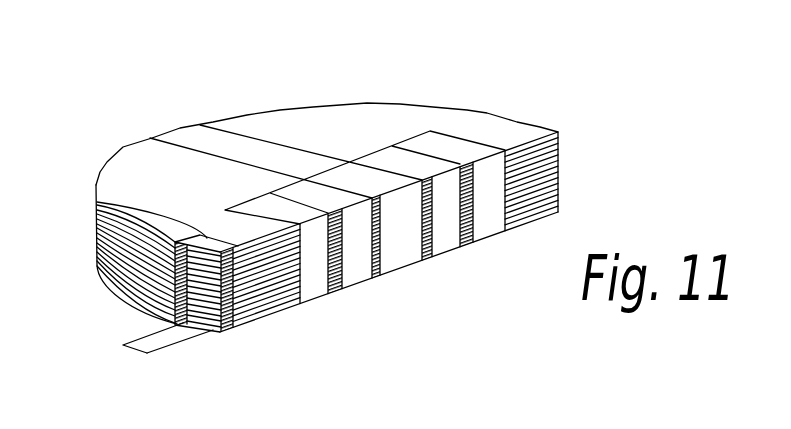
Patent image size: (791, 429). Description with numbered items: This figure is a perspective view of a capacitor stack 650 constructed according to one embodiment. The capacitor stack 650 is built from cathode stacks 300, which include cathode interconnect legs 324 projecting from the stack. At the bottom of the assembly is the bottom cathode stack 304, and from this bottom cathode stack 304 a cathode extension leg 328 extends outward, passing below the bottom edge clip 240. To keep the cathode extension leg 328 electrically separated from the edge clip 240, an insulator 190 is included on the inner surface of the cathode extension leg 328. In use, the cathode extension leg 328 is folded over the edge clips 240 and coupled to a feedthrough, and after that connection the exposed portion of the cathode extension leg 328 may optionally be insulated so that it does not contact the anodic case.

The cathode stacks 300 is at (558, 176).
The edge clip 240 is at (97, 203).
The cathode interconnect legs 324 is at (273, 195).
The bottom cathode stack 304 is at (283, 311).
The cathode extension leg 328 is at (135, 345).
The insulator 190 is at (177, 337).
The capacitor stack 650 is at (527, 65).